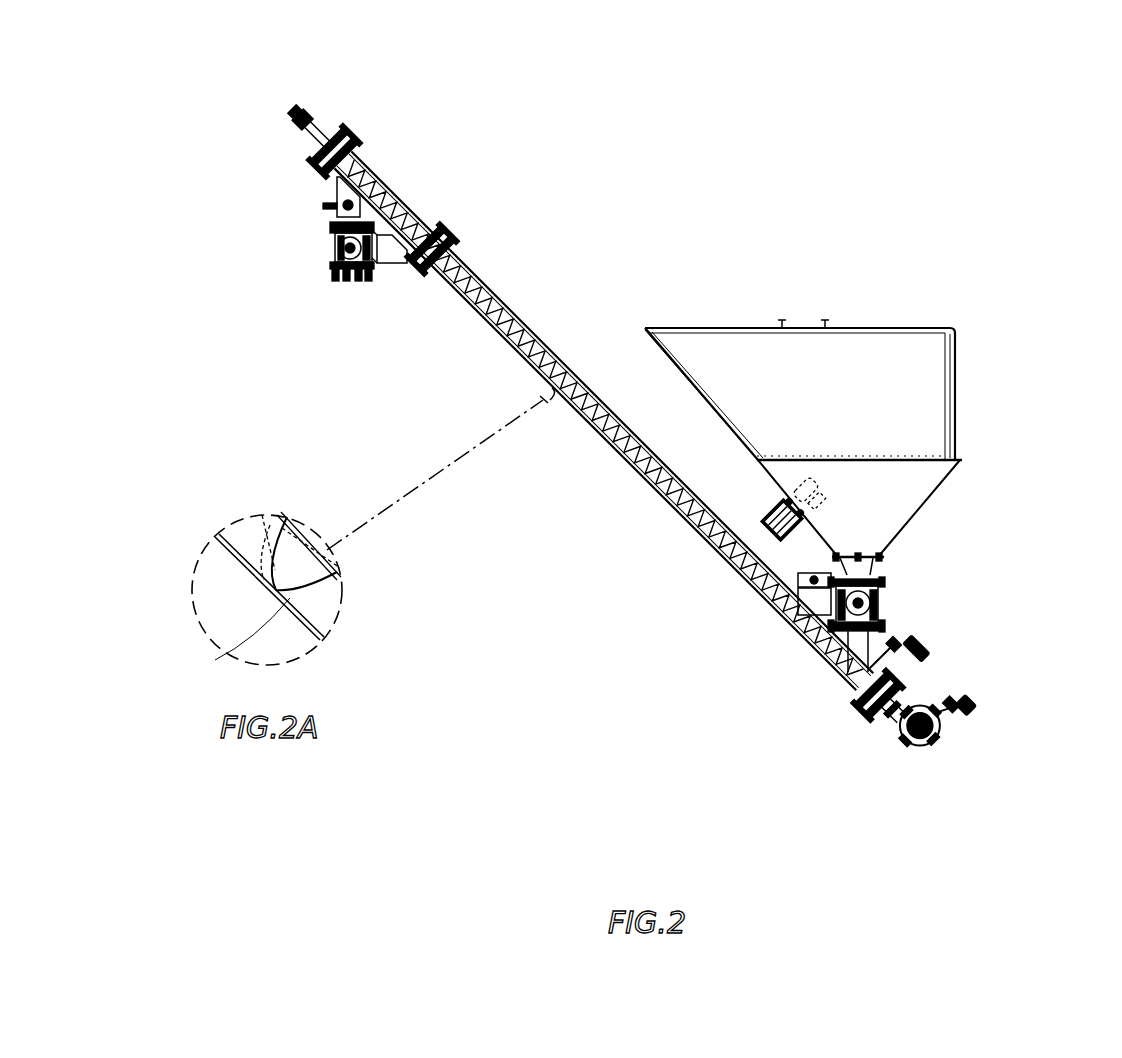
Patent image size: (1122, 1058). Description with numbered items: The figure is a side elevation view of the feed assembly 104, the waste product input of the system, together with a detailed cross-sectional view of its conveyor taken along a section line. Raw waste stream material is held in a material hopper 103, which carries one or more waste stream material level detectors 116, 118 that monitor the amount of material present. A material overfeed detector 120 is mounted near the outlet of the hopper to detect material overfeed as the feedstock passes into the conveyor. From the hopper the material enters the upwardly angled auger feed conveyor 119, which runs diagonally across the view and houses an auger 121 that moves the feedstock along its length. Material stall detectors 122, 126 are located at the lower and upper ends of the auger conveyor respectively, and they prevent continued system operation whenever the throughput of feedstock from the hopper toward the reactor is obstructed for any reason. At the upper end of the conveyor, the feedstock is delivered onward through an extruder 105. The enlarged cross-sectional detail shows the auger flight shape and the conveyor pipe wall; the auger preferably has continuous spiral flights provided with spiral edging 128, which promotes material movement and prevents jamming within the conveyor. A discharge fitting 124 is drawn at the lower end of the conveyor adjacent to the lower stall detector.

In FIG. 2, the material hopper 103 is at (955, 437).
In FIG. 2, the feed assembly 104 is at (767, 110).
In FIG. 2, the extruder 105 is at (328, 265).
In FIG. 2, the waste stream material level detector 116 is at (797, 323).
In FIG. 2, the waste stream material level detector 118 is at (887, 410).
In FIG. 2, the auger feed conveyor 119 is at (467, 267).
In FIG. 2, the material overfeed detector 120 is at (877, 606).
In FIG. 2, the auger 121 is at (473, 305).
In FIG. 2, the material stall detector 122 is at (777, 677).
In FIG. 2, the discharge outlet 124 is at (905, 738).
In FIG. 2, the material stall detector 126 is at (312, 162).
In FIG. 2A, the spiral edging 128 is at (298, 595).